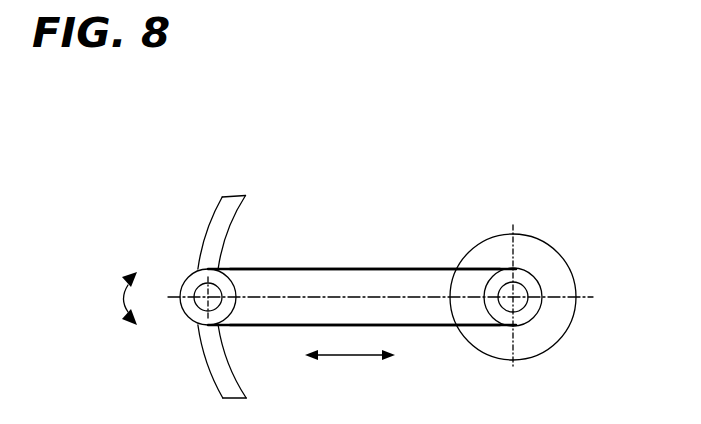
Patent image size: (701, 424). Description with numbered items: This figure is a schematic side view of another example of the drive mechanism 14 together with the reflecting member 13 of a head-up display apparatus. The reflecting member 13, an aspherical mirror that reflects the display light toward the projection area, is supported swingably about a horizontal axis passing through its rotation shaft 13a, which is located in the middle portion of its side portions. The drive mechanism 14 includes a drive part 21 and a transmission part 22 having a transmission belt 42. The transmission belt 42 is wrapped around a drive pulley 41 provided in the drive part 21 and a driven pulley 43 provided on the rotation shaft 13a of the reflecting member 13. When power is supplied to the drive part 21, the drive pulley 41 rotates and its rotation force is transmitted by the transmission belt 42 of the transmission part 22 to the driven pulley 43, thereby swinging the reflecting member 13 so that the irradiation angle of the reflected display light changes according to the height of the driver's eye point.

The reflecting member 13 is at (218, 207).
The rotation shaft 13a is at (199, 282).
The drive mechanism 14 is at (441, 236).
The drive part 21 is at (545, 255).
The transmission part 22 is at (387, 257).
The drive pulley 41 is at (537, 310).
The transmission belt 42 is at (337, 268).
The driven pulley 43 is at (188, 314).